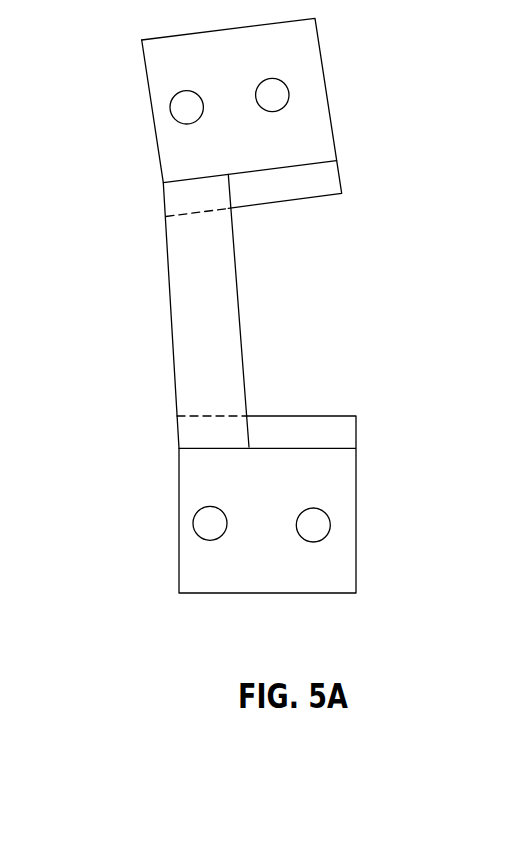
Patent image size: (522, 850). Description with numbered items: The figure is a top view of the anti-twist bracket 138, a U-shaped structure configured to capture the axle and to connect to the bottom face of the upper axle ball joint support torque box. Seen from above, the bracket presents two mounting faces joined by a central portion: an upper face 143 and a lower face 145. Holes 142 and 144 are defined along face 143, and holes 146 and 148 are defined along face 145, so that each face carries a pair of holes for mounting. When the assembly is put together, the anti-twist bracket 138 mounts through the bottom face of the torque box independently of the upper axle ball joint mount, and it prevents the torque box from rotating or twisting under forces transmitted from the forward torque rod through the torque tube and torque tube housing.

The anti-twist bracket 138 is at (233, 305).
The hole 142 is at (289, 90).
The face 143 is at (313, 138).
The hole 144 is at (170, 108).
The face 145 is at (347, 470).
The hole 146 is at (330, 524).
The hole 148 is at (193, 525).